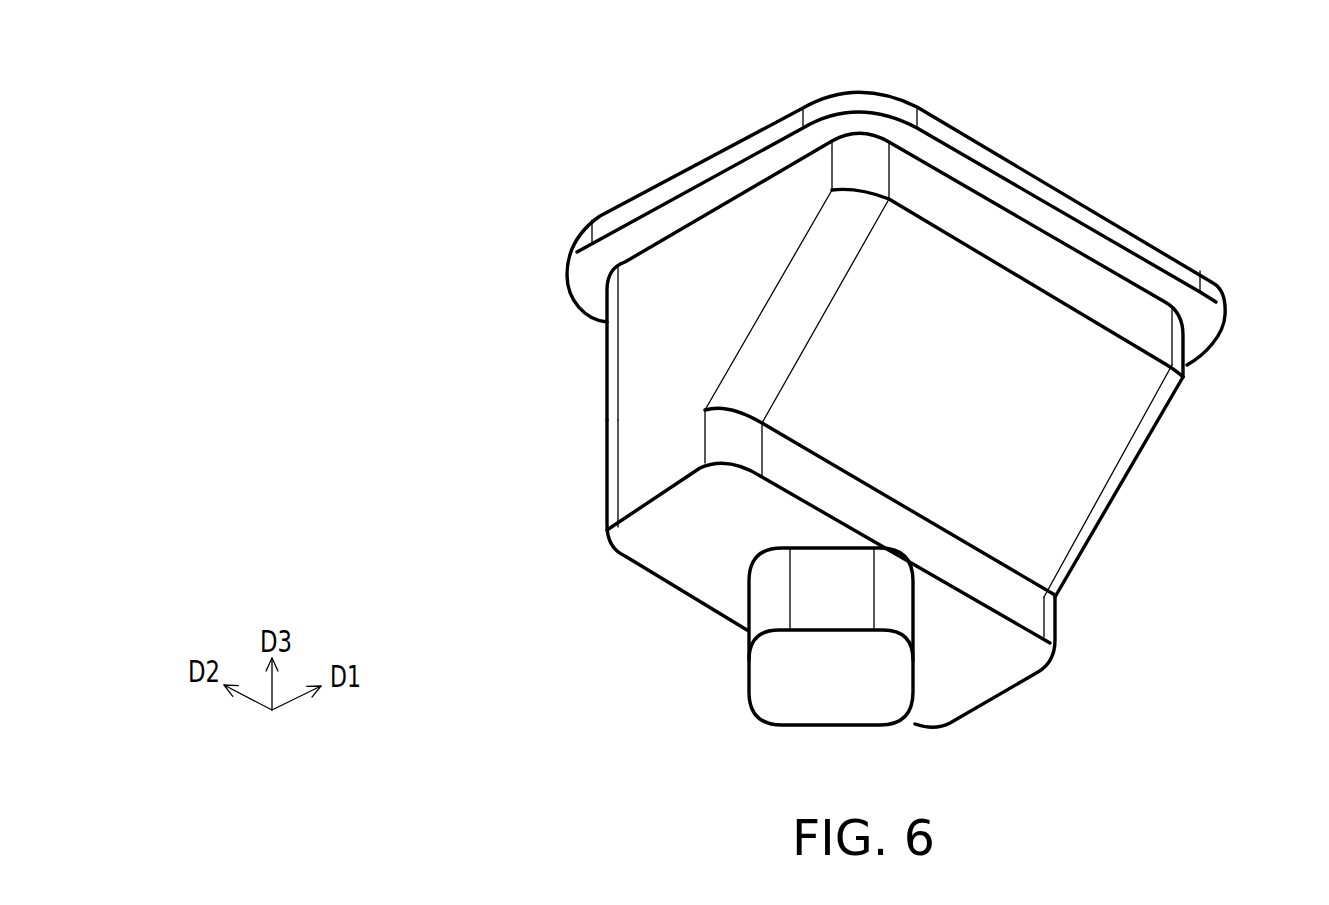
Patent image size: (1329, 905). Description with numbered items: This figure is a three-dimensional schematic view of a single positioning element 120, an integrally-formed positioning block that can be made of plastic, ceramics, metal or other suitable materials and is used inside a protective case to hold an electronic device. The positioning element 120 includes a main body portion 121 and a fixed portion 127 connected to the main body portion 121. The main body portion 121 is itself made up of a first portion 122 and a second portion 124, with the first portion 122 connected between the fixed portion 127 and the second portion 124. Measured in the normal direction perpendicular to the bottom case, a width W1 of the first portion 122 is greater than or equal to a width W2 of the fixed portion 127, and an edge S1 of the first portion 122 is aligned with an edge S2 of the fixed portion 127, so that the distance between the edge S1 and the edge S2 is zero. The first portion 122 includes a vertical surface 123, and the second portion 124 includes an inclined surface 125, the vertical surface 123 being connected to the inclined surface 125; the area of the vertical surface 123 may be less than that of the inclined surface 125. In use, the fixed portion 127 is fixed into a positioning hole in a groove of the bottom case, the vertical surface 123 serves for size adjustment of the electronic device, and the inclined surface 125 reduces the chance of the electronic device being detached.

The positioning element 120 is at (885, 428).
The main body portion 121 is at (850, 409).
The first portion 122 is at (878, 458).
The vertical surface 123 is at (902, 517).
The second portion 124 is at (658, 327).
The inclined surface 125 is at (1082, 420).
The fixed portion 127 is at (762, 684).
The edge of the first portion S1 is at (1020, 620).
The edge of the fixed portion S2 is at (903, 553).
The width of the first portion W1 is at (765, 478).
The width of the fixed portion W2 is at (895, 635).